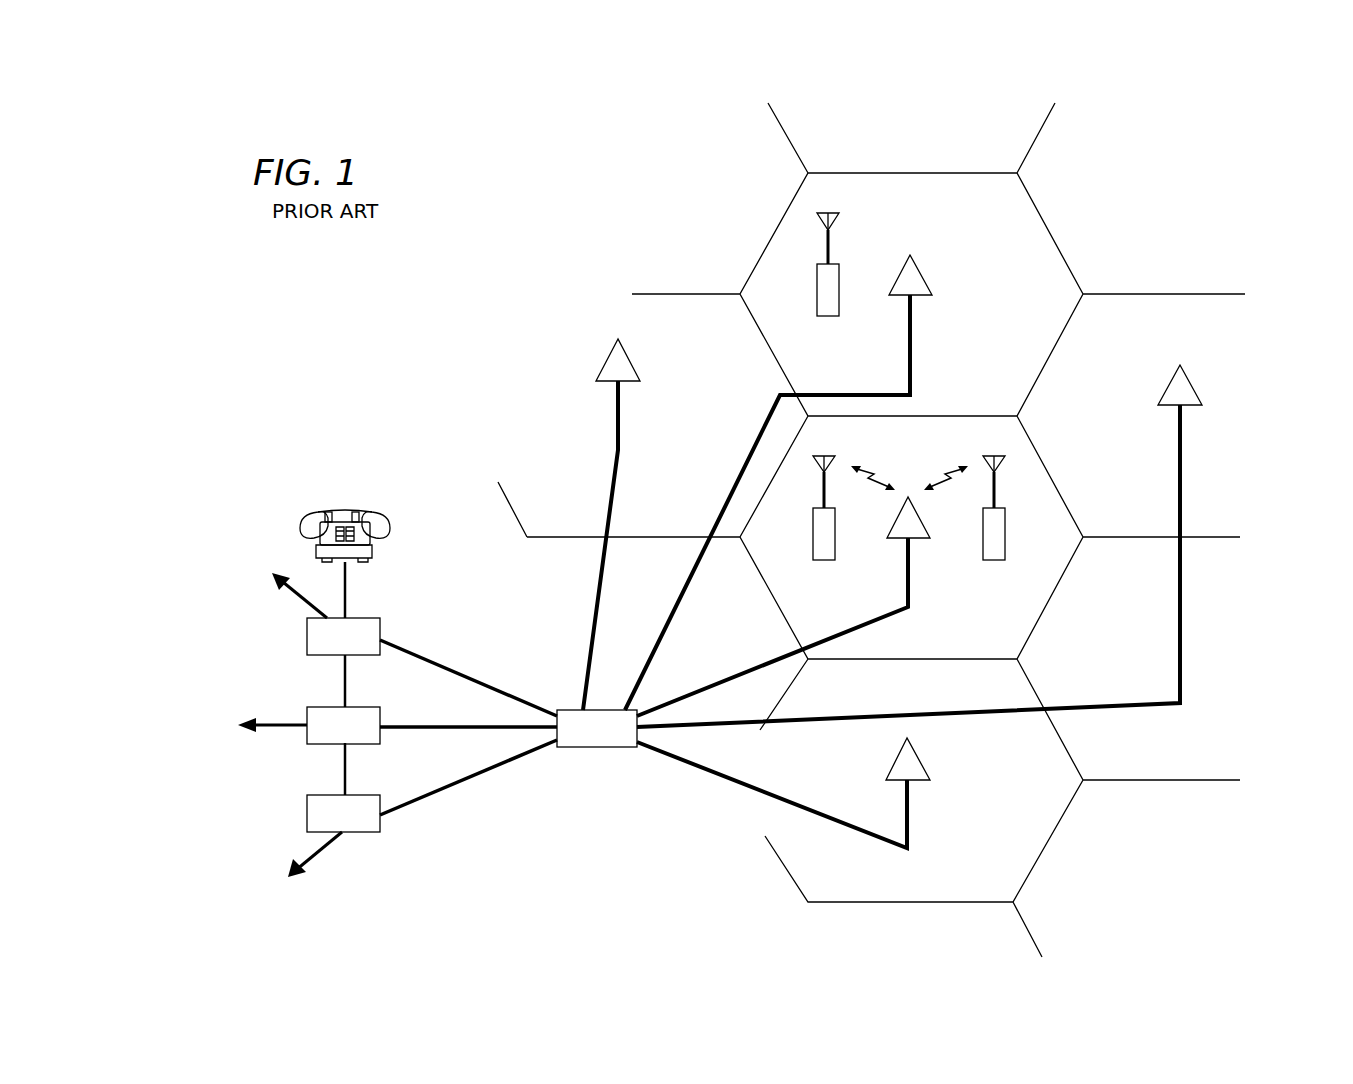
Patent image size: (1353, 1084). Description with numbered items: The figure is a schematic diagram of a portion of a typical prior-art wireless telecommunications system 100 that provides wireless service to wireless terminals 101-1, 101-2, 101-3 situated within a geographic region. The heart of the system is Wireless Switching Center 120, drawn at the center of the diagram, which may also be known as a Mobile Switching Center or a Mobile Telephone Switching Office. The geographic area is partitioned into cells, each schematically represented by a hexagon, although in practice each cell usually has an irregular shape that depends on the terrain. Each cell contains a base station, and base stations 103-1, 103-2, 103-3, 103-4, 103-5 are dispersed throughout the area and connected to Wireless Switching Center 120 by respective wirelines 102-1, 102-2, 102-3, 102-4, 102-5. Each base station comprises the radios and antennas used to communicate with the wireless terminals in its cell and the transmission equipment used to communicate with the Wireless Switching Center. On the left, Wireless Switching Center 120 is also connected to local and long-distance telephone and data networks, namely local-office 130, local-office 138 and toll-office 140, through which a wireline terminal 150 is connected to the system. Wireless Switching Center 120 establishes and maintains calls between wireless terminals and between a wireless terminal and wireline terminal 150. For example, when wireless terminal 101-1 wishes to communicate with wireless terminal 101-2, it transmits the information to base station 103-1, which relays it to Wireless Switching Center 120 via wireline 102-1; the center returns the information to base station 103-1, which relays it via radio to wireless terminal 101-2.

The wireless telecommunications system 100 is at (336, 277).
The wireless terminal 101-1 is at (824, 560).
The wireless terminal 101-2 is at (994, 560).
The wireless terminal 101-3 is at (828, 316).
The wireline 102-1 is at (725, 680).
The wireline 102-2 is at (678, 592).
The wireline 102-3 is at (587, 654).
The wireline 102-4 is at (720, 728).
The wireline 102-5 is at (700, 770).
The base station 103-1 is at (908, 585).
The base station 103-2 is at (910, 330).
The base station 103-3 is at (618, 420).
The base station 103-4 is at (1180, 455).
The base station 103-5 is at (907, 825).
The Wireless Switching Center 120 is at (600, 748).
The local-office 130 is at (307, 630).
The local-office 138 is at (307, 812).
The toll-office 140 is at (307, 710).
The wireline terminal 150 is at (345, 510).